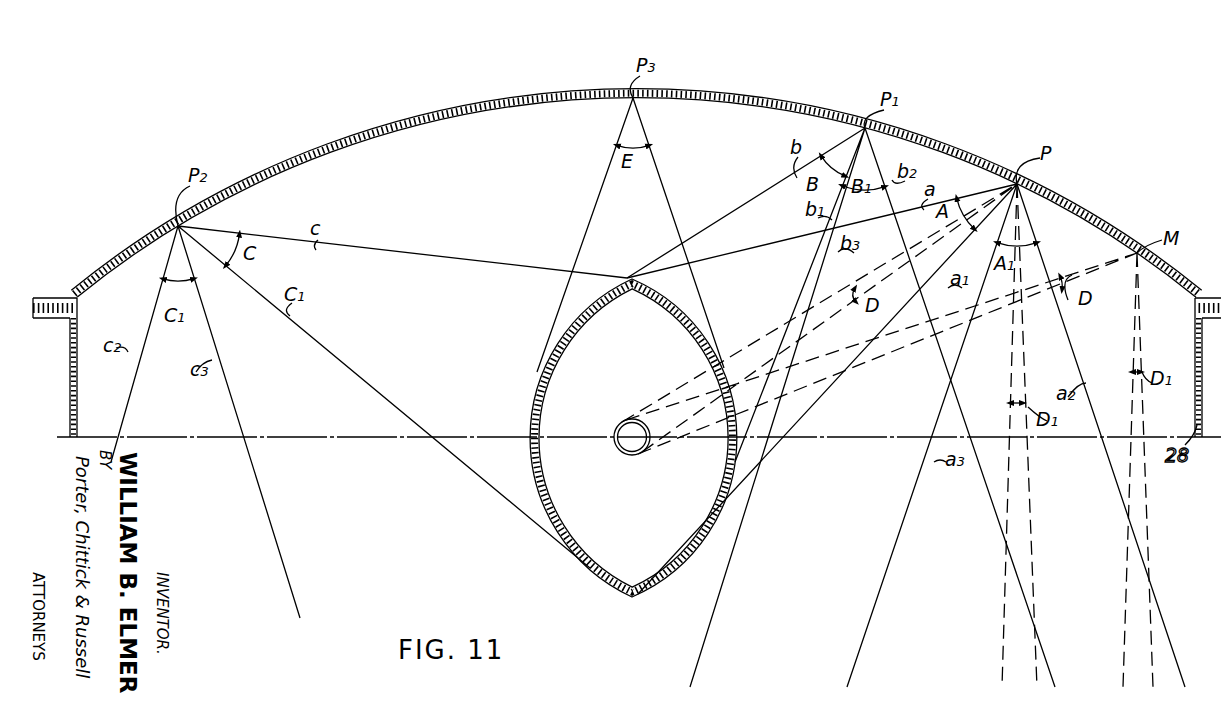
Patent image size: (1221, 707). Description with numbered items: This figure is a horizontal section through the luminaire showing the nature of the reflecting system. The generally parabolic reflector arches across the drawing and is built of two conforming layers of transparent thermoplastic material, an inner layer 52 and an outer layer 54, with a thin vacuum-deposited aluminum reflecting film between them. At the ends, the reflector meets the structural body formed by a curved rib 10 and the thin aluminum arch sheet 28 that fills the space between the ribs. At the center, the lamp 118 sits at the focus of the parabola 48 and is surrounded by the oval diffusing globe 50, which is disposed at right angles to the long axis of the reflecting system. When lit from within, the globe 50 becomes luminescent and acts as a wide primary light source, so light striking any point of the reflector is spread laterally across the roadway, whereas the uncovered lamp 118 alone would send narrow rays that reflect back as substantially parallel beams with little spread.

The curved rib 10 is at (62, 319).
The arch sheet 28 is at (68, 392).
The focus of the parabola 48 is at (626, 450).
The diffusing globe 50 is at (601, 579).
The inner layer 52 is at (688, 100).
The outer layer 54 is at (700, 91).
The lamp 118 is at (648, 446).